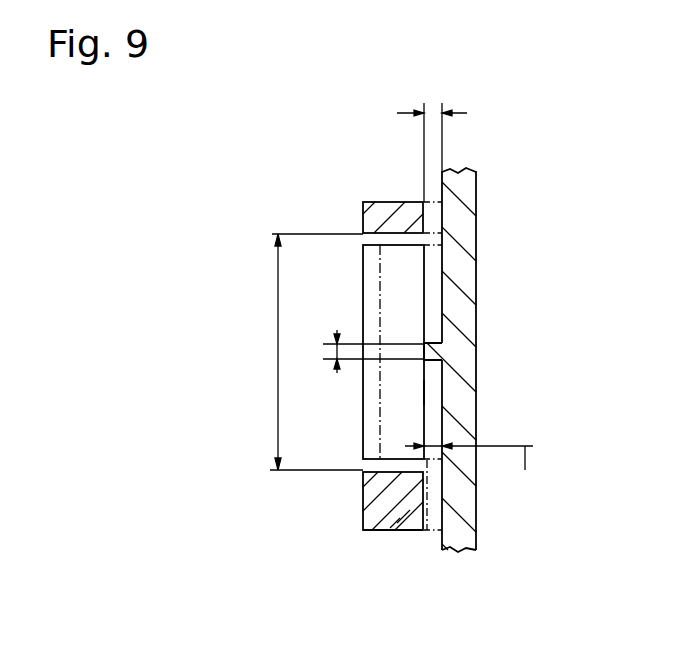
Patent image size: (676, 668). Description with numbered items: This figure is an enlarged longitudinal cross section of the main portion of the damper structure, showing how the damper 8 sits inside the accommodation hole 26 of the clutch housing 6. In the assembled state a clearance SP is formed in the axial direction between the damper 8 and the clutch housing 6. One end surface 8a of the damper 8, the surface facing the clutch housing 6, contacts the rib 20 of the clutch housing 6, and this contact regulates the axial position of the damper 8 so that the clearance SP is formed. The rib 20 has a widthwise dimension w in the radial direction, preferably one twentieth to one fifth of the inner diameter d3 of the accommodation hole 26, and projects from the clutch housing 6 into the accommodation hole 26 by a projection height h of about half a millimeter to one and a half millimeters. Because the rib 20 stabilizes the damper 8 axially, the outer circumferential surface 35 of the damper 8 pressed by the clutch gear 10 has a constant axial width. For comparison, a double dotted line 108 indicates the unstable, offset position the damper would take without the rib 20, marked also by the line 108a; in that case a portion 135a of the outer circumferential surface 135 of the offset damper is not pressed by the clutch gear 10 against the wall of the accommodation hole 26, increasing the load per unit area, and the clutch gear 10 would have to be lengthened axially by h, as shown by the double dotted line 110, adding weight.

The clutch housing 6 is at (467, 202).
The damper 8 is at (366, 431).
The one end surface of the damper 8a is at (425, 393).
The clutch gear 10 is at (370, 521).
The rib 20 is at (437, 348).
The accommodation hole 26 is at (372, 463).
The outer circumferential surface of the damper 35 is at (392, 247).
The damper offset position (double dotted line) 108 is at (380, 292).
The double dotted line 108a is at (538, 476).
The double dotted line (increased clutch gear dimension) 110 is at (427, 530).
The outer circumferential surface of the offset damper 135 is at (351, 587).
The portion of the outer circumferential surface 135a is at (397, 523).
The clearance SP is at (430, 425).
The projection height h is at (437, 112).
The widthwise dimension w is at (336, 349).
The inner diameter d3 is at (278, 350).